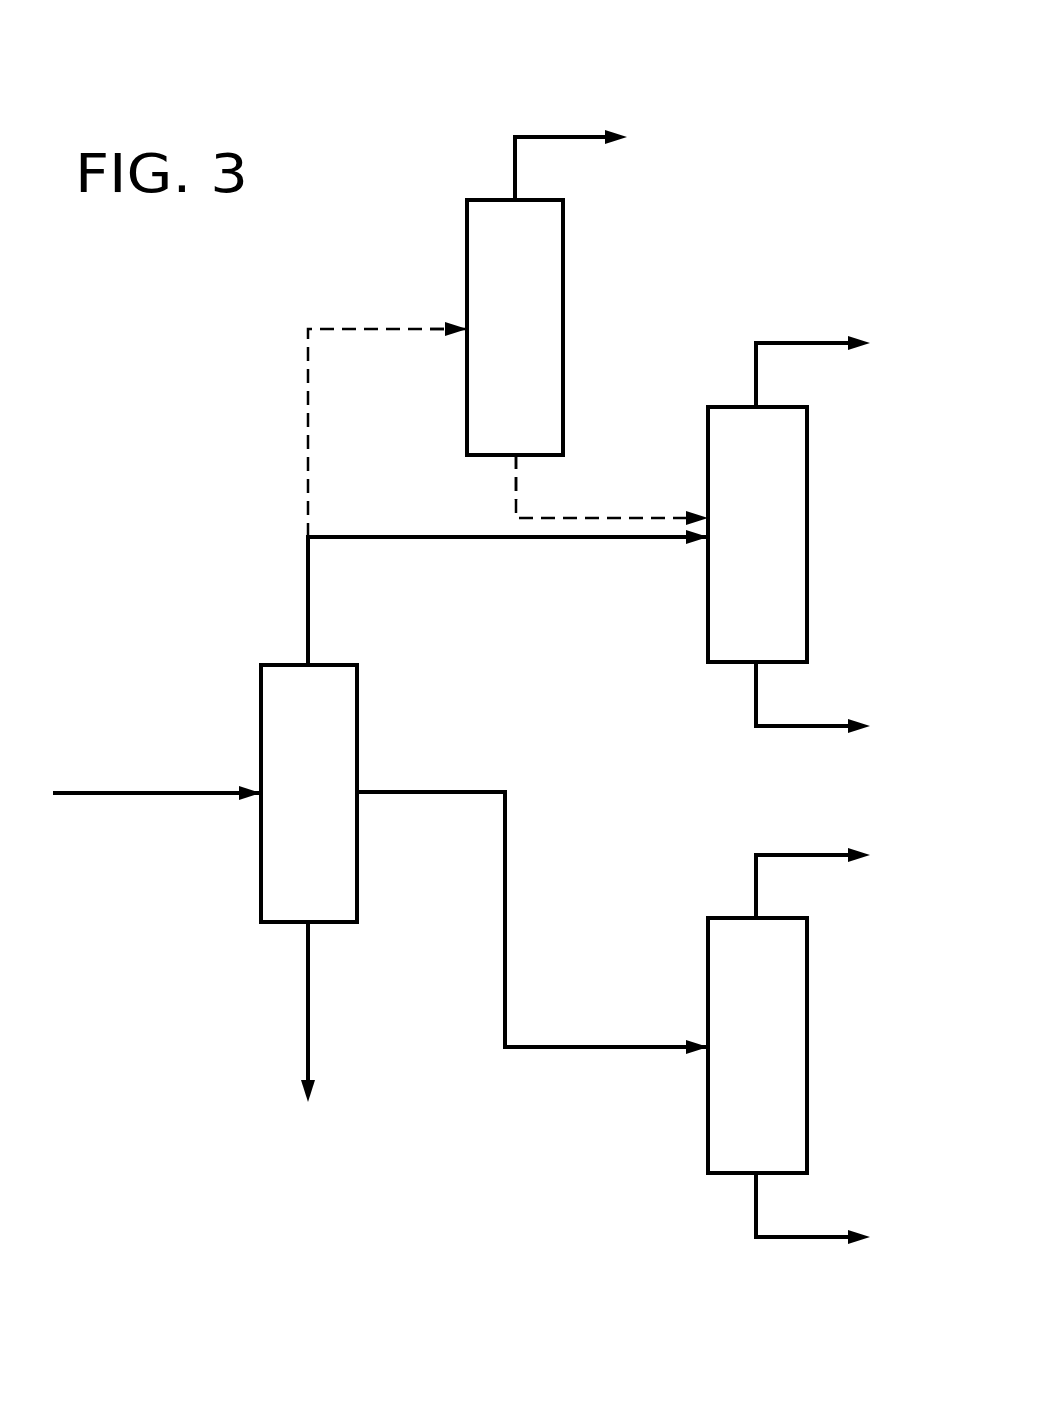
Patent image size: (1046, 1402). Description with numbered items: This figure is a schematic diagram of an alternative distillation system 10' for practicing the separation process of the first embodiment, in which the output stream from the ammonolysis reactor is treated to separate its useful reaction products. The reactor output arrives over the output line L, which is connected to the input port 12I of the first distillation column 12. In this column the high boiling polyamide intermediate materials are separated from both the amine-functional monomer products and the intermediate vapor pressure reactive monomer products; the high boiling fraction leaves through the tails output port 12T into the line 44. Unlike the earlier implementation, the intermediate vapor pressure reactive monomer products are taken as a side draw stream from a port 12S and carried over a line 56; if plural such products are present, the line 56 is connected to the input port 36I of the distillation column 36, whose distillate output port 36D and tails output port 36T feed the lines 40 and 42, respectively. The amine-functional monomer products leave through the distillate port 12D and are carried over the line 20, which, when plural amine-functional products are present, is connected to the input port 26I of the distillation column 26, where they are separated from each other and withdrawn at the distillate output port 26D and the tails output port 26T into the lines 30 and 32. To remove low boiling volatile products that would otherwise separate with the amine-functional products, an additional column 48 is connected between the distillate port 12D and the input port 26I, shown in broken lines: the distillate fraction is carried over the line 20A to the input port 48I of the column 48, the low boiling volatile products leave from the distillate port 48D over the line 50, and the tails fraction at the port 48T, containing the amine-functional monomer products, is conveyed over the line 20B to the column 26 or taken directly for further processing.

The distillation system 10' is at (820, 94).
The first distillation column 12 is at (326, 810).
The input port 12I is at (259, 789).
The distillate port 12D is at (306, 662).
The side draw port 12S is at (360, 789).
The tails output port 12T is at (306, 925).
The output line L is at (138, 791).
The line 20 is at (455, 539).
The line 20A is at (306, 416).
The line 20B is at (567, 516).
The distillation column 26 is at (781, 548).
The input port 26I is at (705, 546).
The distillate output port 26D is at (753, 405).
The tails output port 26T is at (753, 668).
The line 30 is at (795, 340).
The line 32 is at (812, 730).
The distillation column 36 is at (778, 1065).
The input port 36I is at (705, 1057).
The distillate output port 36D is at (753, 916).
The tails output port 36T is at (753, 1178).
The line 40 is at (812, 852).
The line 42 is at (808, 1241).
The line 44 is at (311, 1016).
The additional column 48 is at (537, 349).
The input port 48I is at (465, 325).
The distillate port 48D is at (512, 196).
The tails port 48T is at (515, 462).
The line 50 is at (582, 134).
The line 56 is at (507, 897).